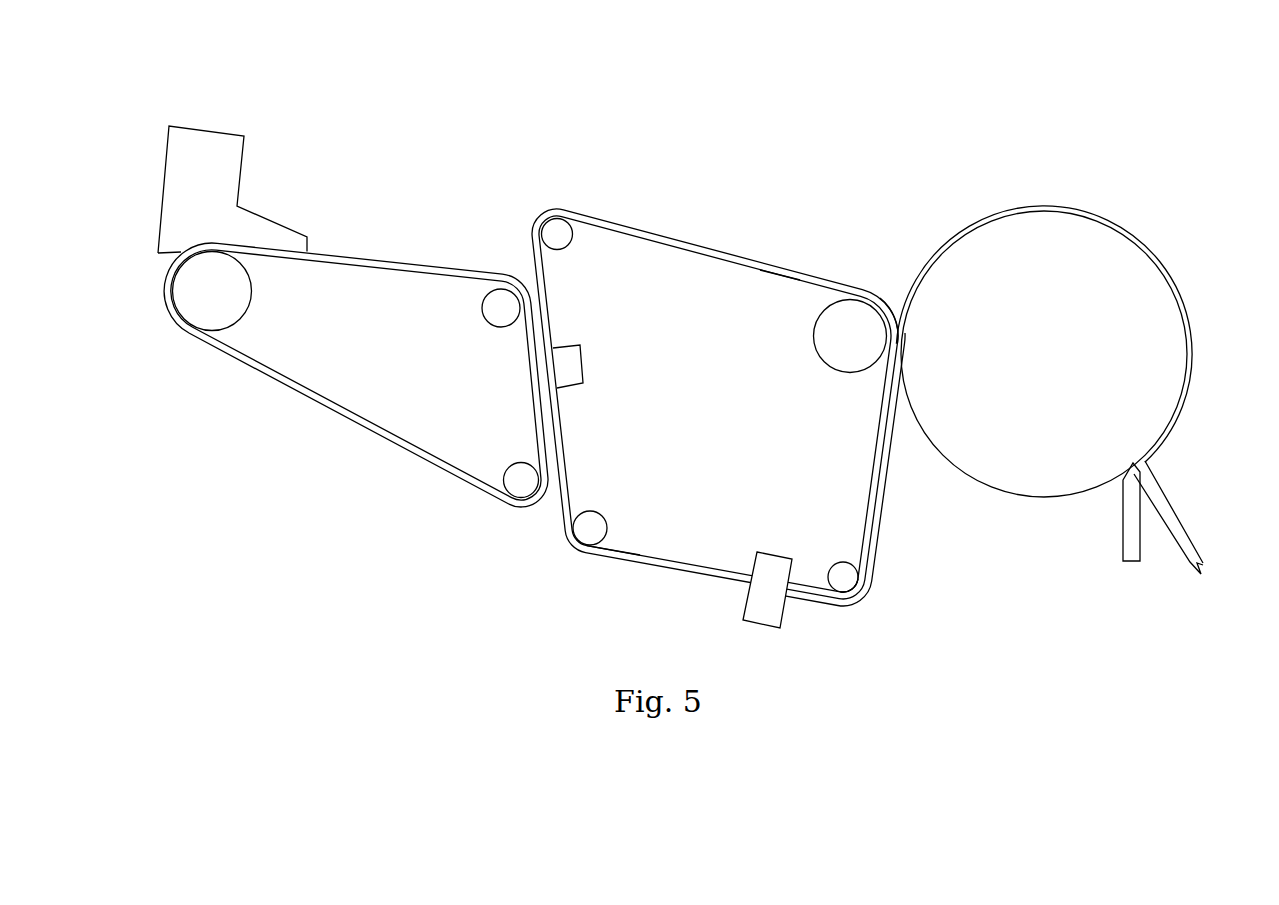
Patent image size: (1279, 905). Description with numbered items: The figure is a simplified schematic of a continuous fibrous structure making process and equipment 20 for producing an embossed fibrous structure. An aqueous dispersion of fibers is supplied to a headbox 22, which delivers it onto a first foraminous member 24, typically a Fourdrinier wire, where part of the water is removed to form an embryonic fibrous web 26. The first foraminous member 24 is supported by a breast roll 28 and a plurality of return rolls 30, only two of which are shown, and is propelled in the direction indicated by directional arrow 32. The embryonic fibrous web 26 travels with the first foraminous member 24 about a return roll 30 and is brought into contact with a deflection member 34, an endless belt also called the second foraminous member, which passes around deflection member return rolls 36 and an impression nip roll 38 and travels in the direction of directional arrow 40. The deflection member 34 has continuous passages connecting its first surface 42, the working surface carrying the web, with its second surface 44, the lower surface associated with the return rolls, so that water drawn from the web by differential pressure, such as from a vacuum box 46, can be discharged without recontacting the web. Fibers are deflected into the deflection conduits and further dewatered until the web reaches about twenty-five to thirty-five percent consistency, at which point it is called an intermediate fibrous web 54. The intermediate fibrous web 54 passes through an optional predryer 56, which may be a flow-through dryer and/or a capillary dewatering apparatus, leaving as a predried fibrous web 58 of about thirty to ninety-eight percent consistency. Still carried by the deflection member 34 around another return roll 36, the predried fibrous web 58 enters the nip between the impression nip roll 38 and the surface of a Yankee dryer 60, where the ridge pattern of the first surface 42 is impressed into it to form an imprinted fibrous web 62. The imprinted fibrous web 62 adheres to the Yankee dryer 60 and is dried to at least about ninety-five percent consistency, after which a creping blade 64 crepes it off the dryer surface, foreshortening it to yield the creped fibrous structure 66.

The process and equipment 20 is at (978, 128).
The headbox 22 is at (227, 153).
The first foraminous member 24 is at (300, 398).
The embryonic fibrous web 26 is at (408, 262).
The breast roll 28 is at (228, 290).
The return rolls 30 is at (493, 314).
The directional arrow 32 is at (502, 252).
The deflection member 34 is at (683, 242).
The deflection member return rolls 36 is at (560, 232).
The impression nip roll 38 is at (837, 338).
The directional arrow 40 is at (576, 188).
The first surface 42 is at (880, 298).
The second surface 44 is at (773, 277).
The vacuum box 46 is at (572, 355).
The intermediate fibrous web 54 is at (612, 567).
The predryer 56 is at (780, 563).
The predried fibrous web 58 is at (853, 608).
The Yankee dryer 60 is at (1152, 367).
The imprinted fibrous web 62 is at (993, 213).
The creping blade 64 is at (1133, 537).
The creped fibrous structure 66 is at (1167, 508).